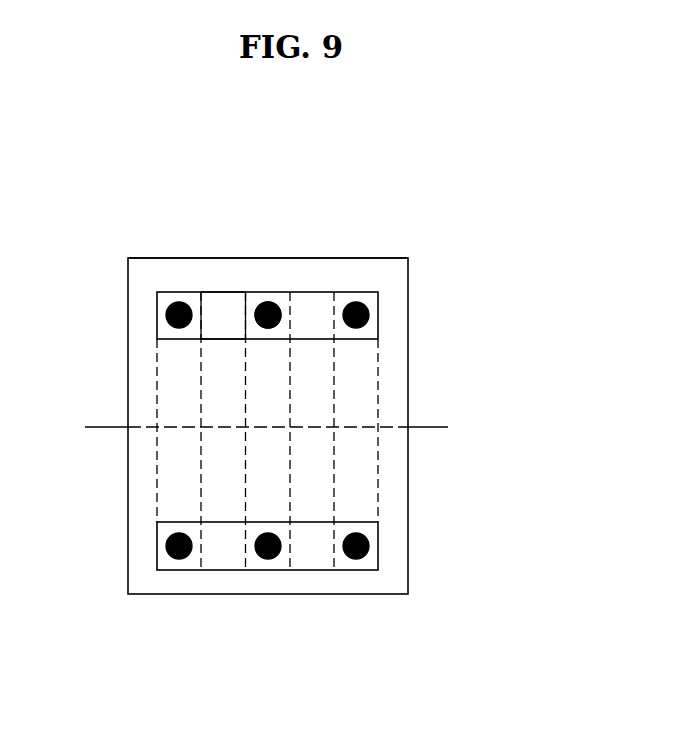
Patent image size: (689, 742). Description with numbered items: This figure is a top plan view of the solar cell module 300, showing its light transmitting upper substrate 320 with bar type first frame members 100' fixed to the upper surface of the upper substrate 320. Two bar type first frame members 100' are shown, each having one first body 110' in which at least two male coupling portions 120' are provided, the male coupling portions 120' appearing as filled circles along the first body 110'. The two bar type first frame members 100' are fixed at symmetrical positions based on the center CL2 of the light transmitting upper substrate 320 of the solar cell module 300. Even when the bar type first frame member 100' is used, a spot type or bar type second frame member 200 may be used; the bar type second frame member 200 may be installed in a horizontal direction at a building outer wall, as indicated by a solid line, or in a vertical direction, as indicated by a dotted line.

The solar cell module 300 is at (149, 233).
The light transmitting upper substrate 320 is at (350, 273).
The second frame member 200 is at (362, 292).
The bar type first frame member 100' is at (326, 431).
The first body 110' is at (223, 269).
The male coupling portion 120' is at (273, 263).
The center of the light transmitting upper substrate CL2 is at (288, 428).